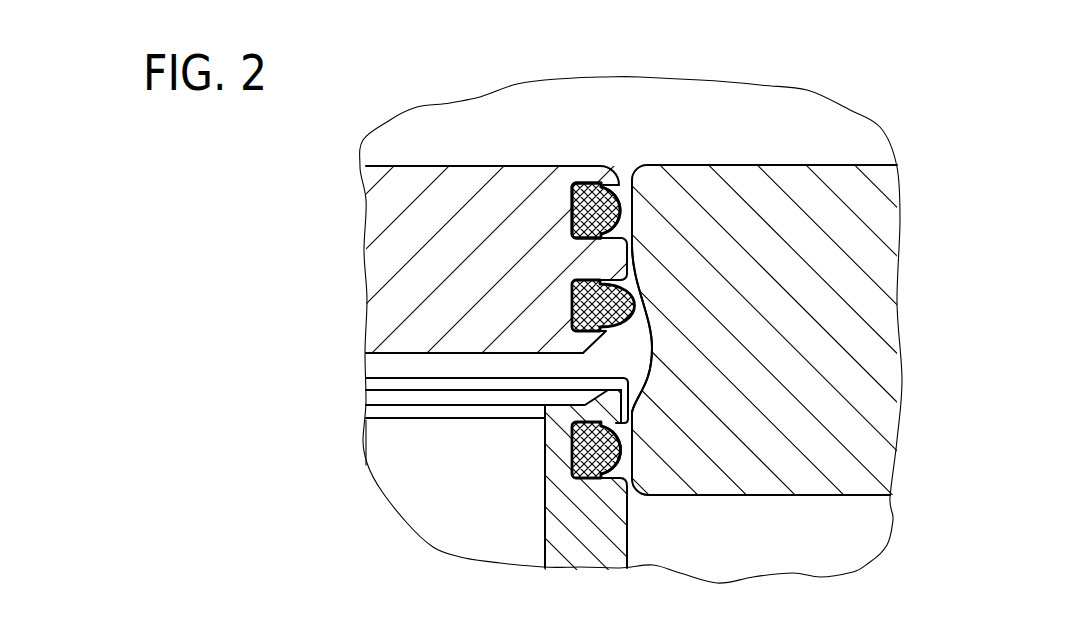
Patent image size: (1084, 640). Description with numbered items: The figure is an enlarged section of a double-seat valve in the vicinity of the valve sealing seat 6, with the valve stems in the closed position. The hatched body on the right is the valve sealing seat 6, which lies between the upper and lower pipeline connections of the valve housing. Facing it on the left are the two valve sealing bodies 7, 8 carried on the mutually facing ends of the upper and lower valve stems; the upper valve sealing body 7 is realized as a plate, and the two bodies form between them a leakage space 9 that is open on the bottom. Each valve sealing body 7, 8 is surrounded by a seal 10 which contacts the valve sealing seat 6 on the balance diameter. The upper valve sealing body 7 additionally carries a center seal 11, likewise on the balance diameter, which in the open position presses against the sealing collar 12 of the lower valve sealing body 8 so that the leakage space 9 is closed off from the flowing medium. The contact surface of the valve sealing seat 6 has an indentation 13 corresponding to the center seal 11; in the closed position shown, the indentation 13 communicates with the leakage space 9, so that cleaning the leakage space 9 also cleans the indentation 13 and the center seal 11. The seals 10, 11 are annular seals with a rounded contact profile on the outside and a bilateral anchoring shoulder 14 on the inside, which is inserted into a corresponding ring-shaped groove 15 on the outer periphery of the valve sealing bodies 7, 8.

The valve sealing seat 6 is at (650, 408).
The valve sealing body 7 is at (413, 177).
The valve sealing body 8 is at (612, 557).
The leakage space 9 is at (428, 508).
The seal 10 is at (593, 212).
The center seal 11 is at (598, 305).
The sealing collar 12 is at (607, 383).
The indentation 13 is at (663, 320).
The anchoring shoulder 14 is at (583, 185).
The ring-shaped groove 15 is at (573, 203).